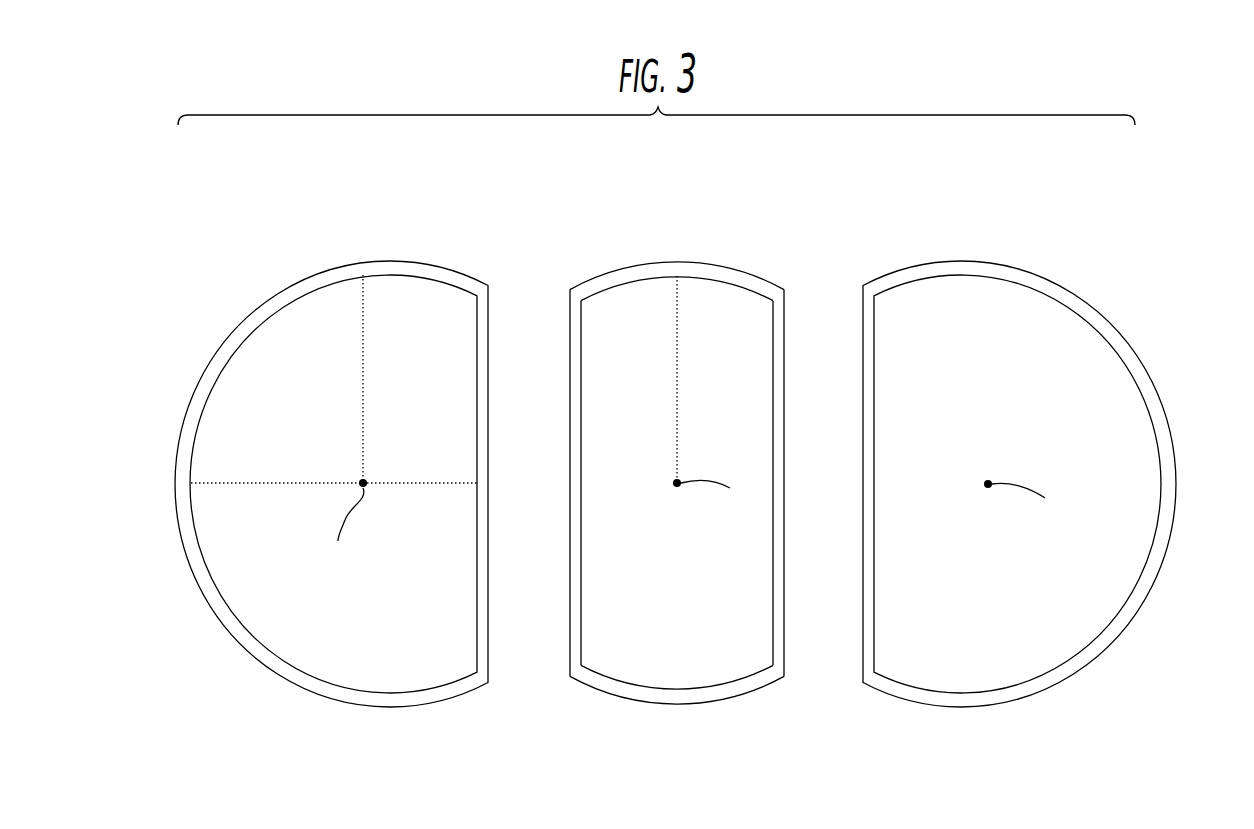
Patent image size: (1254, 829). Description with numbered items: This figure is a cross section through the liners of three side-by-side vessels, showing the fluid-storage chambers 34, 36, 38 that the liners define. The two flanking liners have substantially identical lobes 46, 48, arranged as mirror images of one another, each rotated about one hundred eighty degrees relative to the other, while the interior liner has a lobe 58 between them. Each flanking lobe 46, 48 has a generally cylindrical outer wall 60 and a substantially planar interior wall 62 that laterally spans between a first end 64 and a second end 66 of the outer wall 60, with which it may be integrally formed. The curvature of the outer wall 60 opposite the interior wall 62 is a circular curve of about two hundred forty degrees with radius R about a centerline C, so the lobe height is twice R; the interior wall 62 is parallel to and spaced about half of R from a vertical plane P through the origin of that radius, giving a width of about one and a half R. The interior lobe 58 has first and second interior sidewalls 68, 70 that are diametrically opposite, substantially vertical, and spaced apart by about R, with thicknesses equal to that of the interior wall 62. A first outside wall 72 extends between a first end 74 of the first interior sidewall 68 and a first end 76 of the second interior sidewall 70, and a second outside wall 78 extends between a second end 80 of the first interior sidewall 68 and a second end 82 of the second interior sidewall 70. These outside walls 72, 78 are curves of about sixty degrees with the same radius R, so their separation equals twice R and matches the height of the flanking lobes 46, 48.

The chamber 34 is at (370, 634).
The chamber 36 is at (974, 634).
The chamber 38 is at (672, 633).
The lobe 46 is at (258, 220).
The lobe 48 is at (1064, 216).
The lobe 58 is at (641, 203).
The cylindrical outer wall 60 is at (310, 694).
The interior wall 62 is at (477, 537).
The first end 64 is at (489, 661).
The second end 66 is at (490, 292).
The first interior sidewall 68 is at (581, 403).
The second interior sidewall 70 is at (773, 513).
The first outside wall 72 is at (673, 705).
The first end 74 is at (569, 674).
The first end 76 is at (788, 679).
The second outside wall 78 is at (703, 262).
The second end 80 is at (568, 306).
The second end 82 is at (786, 302).